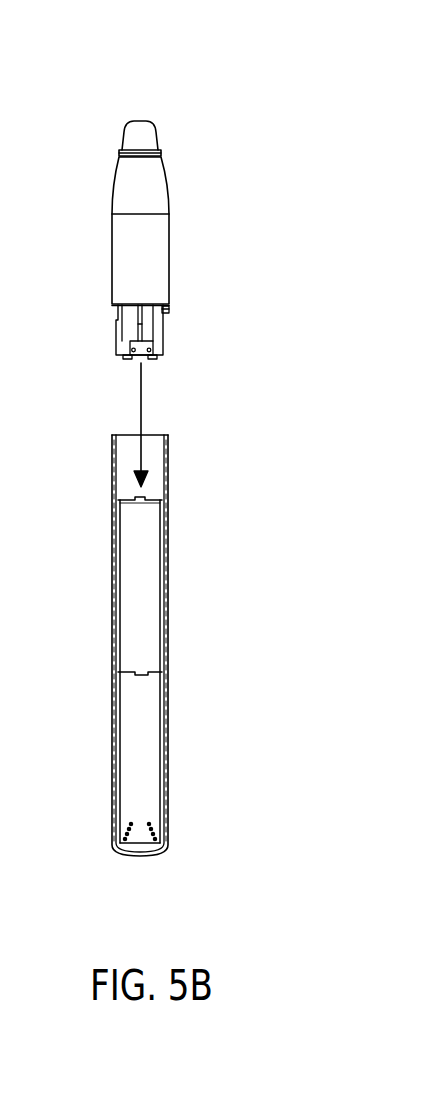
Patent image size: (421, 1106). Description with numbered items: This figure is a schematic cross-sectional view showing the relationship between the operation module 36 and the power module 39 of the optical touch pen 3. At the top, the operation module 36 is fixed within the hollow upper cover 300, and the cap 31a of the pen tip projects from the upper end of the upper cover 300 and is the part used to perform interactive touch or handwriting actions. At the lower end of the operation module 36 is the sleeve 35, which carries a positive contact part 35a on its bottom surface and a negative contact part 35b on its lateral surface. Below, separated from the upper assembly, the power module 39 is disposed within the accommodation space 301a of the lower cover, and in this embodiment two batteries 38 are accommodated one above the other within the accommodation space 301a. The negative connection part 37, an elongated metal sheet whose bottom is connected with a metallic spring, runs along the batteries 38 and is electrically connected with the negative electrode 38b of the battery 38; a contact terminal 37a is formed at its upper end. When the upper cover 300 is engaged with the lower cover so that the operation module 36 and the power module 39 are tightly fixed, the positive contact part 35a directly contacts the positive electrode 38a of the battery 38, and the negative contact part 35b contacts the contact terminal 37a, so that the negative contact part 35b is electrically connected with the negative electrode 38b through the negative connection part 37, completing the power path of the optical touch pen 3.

The optical touch pen 3 is at (244, 40).
The cap 31a is at (143, 141).
The operation module 36 is at (168, 245).
The upper cover 300 is at (145, 265).
The sleeve 35 is at (166, 340).
The positive contact part 35a is at (166, 358).
The negative contact part 35b is at (139, 343).
The accommodation space 301a is at (150, 450).
The negative connection part 37 is at (94, 661).
The contact terminal 37a is at (116, 496).
The battery 38 is at (191, 677).
The positive electrode 38a is at (136, 499).
The negative electrode 38b is at (148, 845).
The power module 39 is at (165, 631).